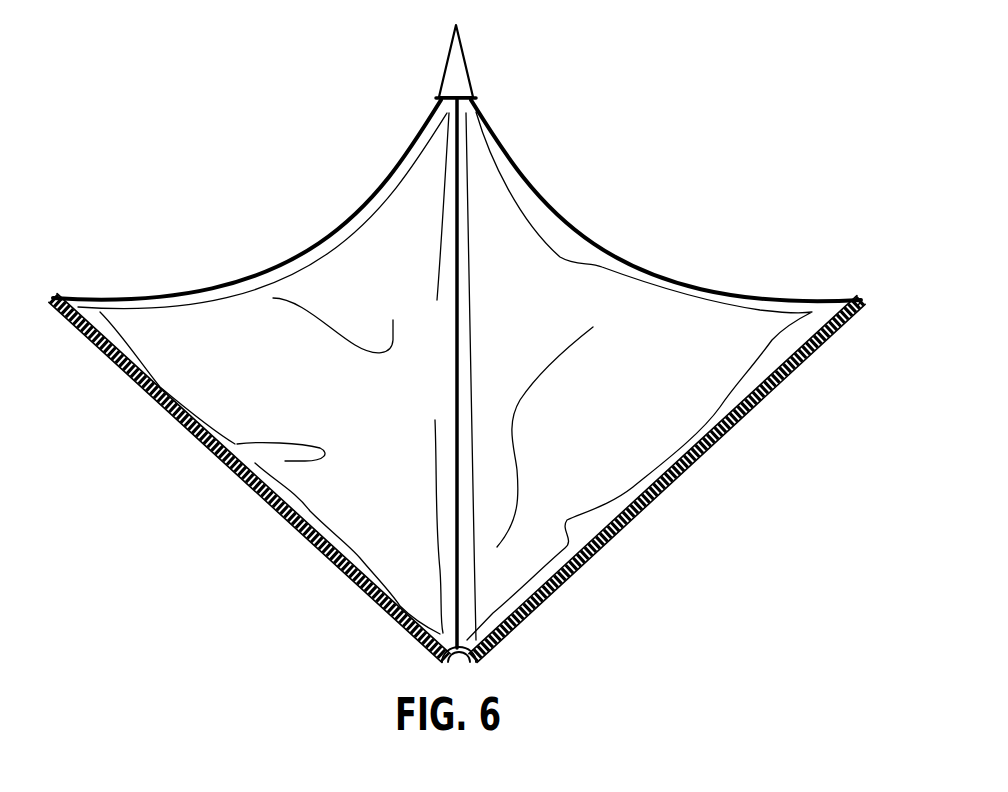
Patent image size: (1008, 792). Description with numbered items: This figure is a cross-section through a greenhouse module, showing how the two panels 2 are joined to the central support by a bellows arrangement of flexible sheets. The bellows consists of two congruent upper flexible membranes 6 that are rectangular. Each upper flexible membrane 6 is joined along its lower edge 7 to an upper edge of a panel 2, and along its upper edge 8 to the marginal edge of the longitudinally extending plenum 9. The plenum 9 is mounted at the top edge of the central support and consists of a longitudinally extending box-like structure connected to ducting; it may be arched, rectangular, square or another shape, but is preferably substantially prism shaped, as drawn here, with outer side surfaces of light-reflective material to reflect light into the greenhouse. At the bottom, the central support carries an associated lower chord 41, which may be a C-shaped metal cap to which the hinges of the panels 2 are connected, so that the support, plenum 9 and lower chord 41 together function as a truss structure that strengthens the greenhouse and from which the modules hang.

The plenum 9 is at (463, 47).
The upper edge of upper flexible membrane 8 is at (476, 99).
The upper flexible membrane 6 is at (590, 243).
The lower edge of upper flexible membrane 7 is at (861, 299).
The panel 2 is at (714, 447).
The lower chord 41 is at (472, 662).